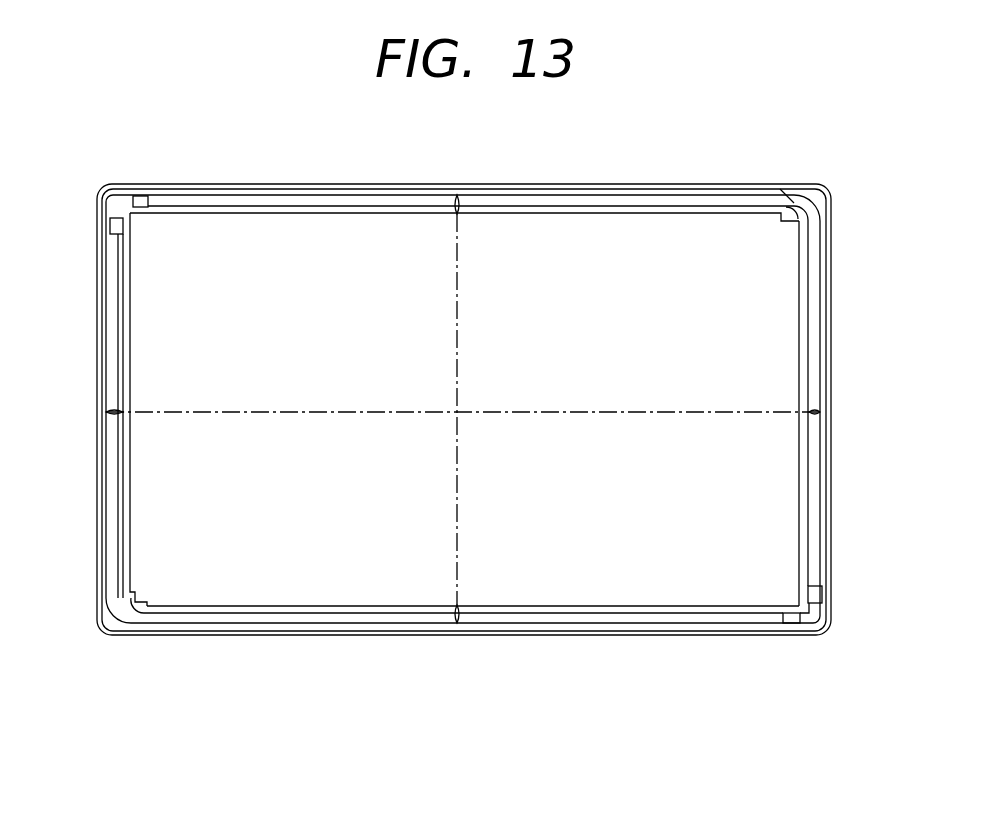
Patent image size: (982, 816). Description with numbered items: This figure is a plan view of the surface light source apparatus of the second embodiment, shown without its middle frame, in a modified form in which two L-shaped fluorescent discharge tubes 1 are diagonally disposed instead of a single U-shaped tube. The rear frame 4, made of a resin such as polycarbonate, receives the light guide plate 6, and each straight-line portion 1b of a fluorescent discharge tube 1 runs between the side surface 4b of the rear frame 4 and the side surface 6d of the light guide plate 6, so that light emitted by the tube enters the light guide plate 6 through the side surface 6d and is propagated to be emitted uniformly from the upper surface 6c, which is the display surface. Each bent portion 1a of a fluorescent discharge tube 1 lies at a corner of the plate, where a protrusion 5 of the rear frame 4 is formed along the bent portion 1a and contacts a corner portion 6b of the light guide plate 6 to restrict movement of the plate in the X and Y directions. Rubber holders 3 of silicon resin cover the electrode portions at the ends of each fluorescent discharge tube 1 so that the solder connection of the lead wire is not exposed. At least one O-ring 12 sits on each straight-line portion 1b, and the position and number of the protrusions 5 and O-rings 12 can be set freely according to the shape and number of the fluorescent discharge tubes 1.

The fluorescent discharge tube 1 is at (250, 195).
The bent portion 1a is at (798, 200).
The straight-line portion 1b is at (352, 200).
The rubber holder 3 is at (143, 195).
The rear frame 4 is at (196, 184).
The side surface of the rear frame 4b is at (825, 189).
The protrusion 5 is at (790, 200).
The light guide plate 6 is at (633, 575).
The corner portion of the light guide plate 6b is at (788, 225).
The upper surface of the light guide plate 6c is at (396, 462).
The side surface of the light guide plate 6d is at (293, 213).
The O-ring 12 is at (460, 195).